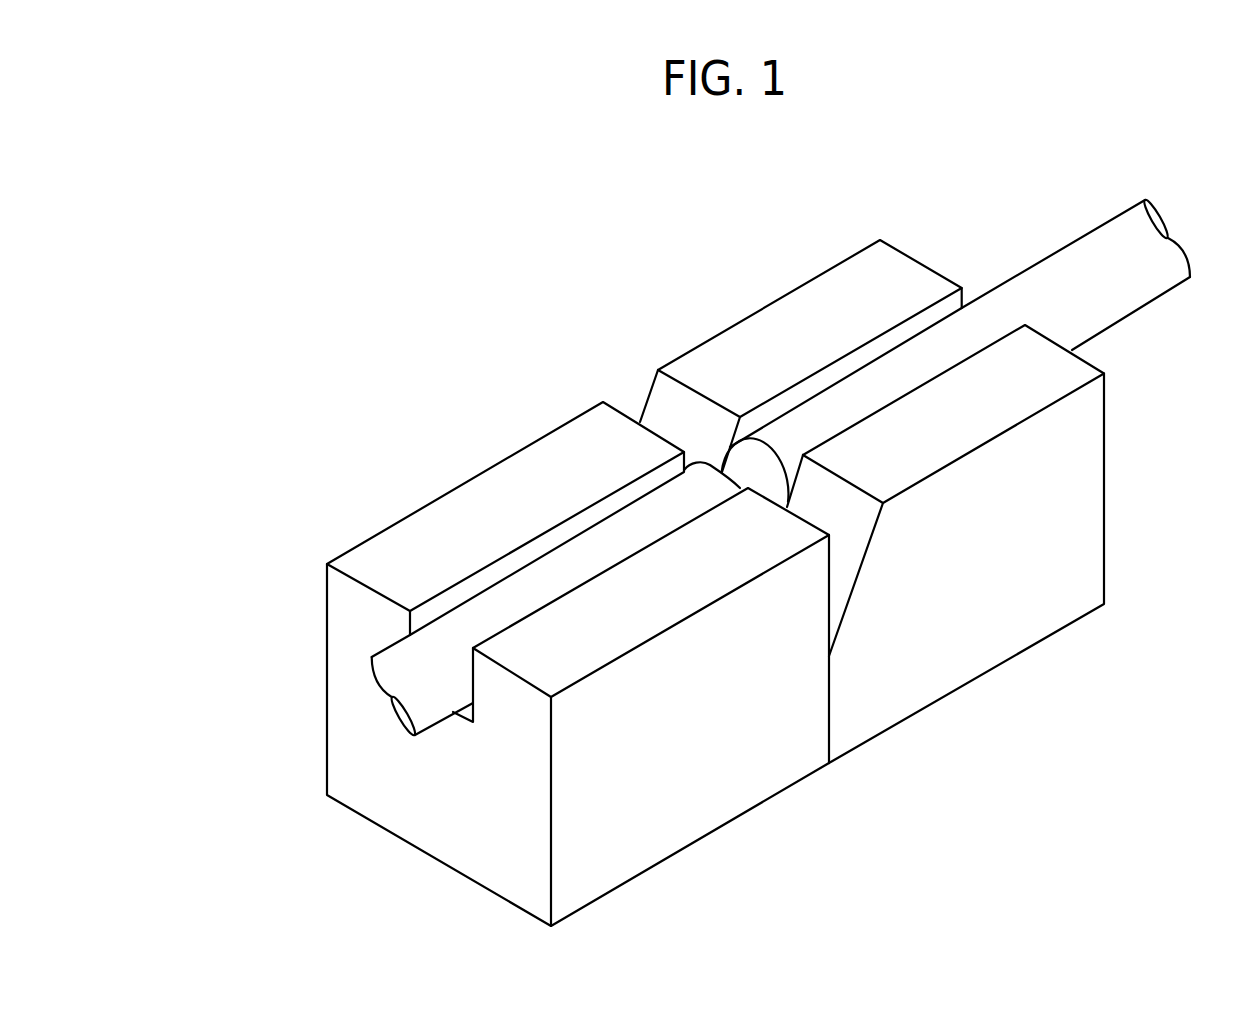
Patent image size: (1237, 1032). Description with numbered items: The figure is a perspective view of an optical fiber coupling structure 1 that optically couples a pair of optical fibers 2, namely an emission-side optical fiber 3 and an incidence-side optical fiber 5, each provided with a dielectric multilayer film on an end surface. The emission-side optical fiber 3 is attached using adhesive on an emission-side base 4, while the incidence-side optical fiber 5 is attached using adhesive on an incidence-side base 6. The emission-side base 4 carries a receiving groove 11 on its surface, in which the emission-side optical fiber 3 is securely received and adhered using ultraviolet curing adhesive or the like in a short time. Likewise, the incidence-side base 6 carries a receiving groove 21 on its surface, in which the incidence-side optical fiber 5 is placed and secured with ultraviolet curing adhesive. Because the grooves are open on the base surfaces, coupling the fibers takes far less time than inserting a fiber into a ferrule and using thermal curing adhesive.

The optical fiber coupling structure 1 is at (342, 366).
The optical fibers 2 is at (400, 630).
The emission-side optical fiber 3 is at (467, 598).
The emission-side base 4 is at (500, 460).
The incidence-side optical fiber 5 is at (1085, 240).
The incidence-side base 6 is at (712, 335).
The receiving groove 11 is at (570, 527).
The receiving groove 21 is at (830, 377).